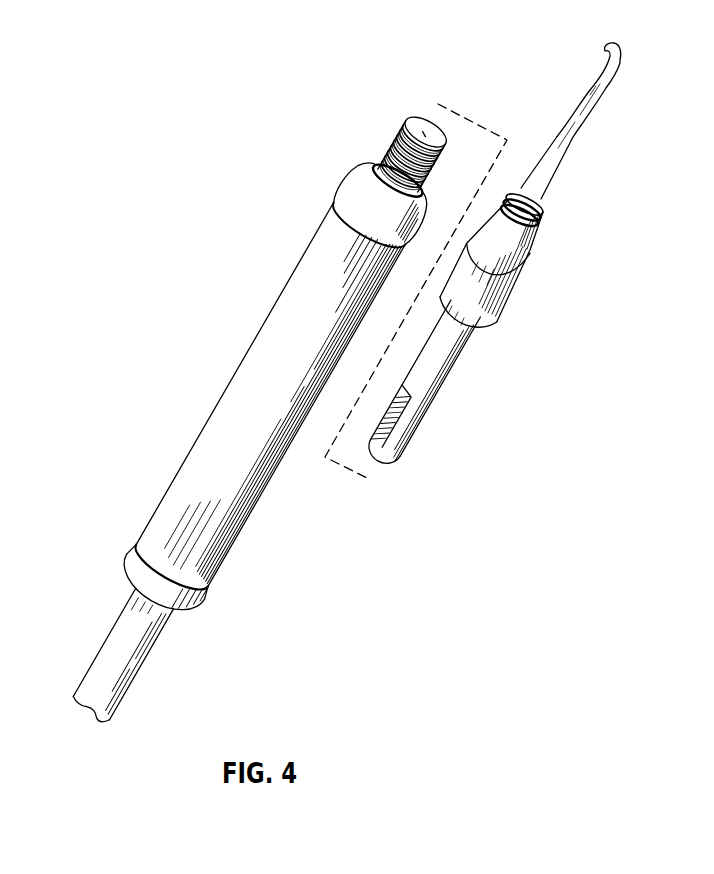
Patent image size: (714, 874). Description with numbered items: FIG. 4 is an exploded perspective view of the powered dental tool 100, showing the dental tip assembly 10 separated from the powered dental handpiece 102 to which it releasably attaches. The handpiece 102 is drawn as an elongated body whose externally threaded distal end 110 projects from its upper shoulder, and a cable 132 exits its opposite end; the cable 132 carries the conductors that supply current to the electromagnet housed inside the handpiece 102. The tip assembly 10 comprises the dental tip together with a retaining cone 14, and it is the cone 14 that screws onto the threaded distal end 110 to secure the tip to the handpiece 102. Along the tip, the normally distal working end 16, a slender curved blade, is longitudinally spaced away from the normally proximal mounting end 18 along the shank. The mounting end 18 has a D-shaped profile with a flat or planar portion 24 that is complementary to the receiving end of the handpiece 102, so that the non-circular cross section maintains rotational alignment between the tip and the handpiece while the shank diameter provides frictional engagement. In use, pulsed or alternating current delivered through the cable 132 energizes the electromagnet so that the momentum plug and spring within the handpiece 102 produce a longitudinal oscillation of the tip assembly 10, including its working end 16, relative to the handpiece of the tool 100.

The dental tip assembly 10 is at (516, 258).
The retaining cone 14 is at (501, 300).
The working end 16 is at (617, 44).
The mounting end 18 is at (444, 402).
The planar portion 24 is at (397, 412).
The dental tool 100 is at (244, 403).
The powered dental handpiece 102 is at (212, 443).
The externally threaded distal end 110 is at (426, 124).
The cable 132 is at (116, 654).